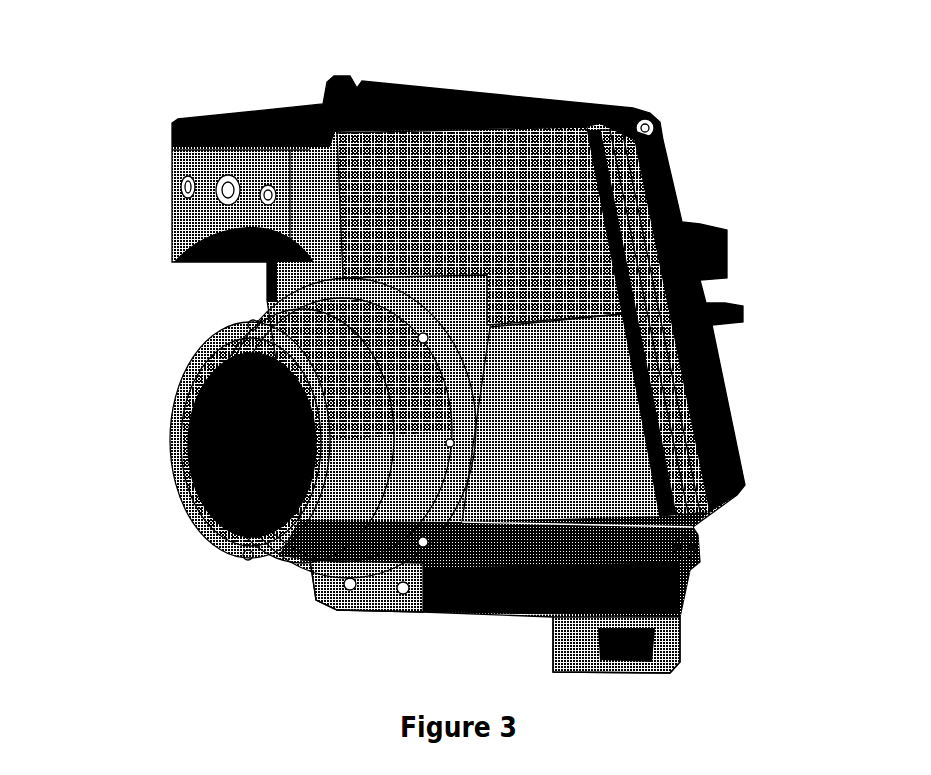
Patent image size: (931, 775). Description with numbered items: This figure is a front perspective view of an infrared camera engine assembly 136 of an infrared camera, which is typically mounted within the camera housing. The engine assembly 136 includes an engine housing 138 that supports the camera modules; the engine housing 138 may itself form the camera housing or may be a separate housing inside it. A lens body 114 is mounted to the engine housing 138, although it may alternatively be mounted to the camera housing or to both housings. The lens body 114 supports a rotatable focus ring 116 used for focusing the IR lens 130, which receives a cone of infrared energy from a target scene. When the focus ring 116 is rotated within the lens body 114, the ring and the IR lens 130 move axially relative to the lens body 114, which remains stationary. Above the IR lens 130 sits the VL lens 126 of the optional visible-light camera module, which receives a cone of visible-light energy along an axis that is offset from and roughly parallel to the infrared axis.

The lens body 114 is at (418, 456).
The focus ring 116 is at (365, 456).
The VL lens 126 is at (232, 188).
The IR lens 130 is at (268, 453).
The engine assembly 136 is at (606, 414).
The engine housing 138 is at (513, 251).